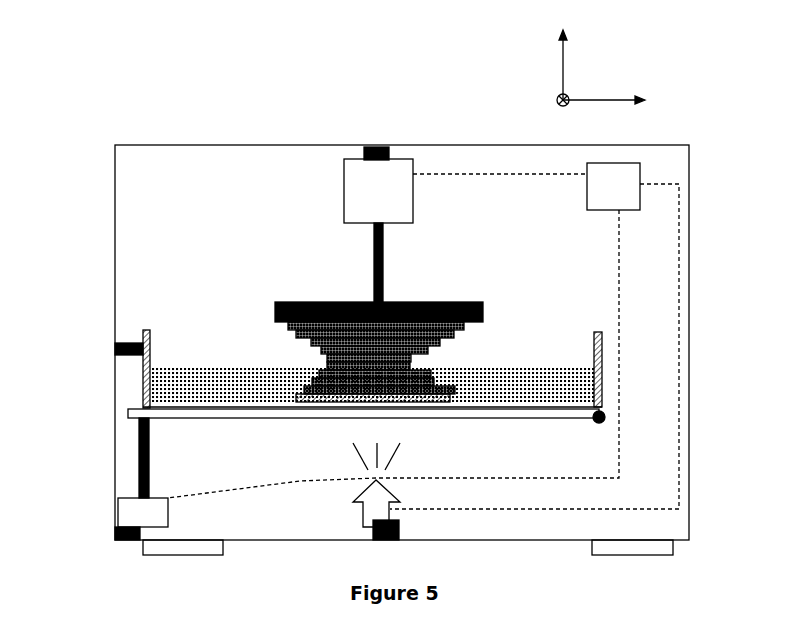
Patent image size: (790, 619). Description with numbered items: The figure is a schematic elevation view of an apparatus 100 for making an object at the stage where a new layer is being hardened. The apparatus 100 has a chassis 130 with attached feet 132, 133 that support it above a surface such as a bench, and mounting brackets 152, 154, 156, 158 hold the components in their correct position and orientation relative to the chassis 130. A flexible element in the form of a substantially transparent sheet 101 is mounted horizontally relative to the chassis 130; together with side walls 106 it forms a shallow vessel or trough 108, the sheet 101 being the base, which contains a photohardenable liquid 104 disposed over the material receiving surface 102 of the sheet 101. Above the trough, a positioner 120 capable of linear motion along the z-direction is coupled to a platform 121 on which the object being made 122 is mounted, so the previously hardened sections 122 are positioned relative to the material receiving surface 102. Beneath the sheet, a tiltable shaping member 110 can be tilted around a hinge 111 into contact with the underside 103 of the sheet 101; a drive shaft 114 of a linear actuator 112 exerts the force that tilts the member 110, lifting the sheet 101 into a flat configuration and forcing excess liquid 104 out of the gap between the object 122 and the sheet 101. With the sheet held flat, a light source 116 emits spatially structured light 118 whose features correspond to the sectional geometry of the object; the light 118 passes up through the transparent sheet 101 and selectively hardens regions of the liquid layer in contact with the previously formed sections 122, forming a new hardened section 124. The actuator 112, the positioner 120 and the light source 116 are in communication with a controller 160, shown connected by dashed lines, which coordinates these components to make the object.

The apparatus for making an object 100 is at (485, 76).
The substantially transparent sheet 101 is at (143, 412).
The material receiving surface 102 is at (185, 403).
The underside of the sheet 103 is at (229, 408).
The photohardenable liquid 104 is at (548, 388).
The side walls 106 is at (596, 340).
The trough 108 is at (128, 387).
The tiltable shaping member 110 is at (563, 420).
The hinge 111 is at (604, 422).
The linear actuator 112 is at (158, 518).
The drive shaft 114 is at (150, 490).
The light source 116 is at (390, 515).
The structured light 118 is at (370, 468).
The positioner 120 is at (413, 209).
The platform 121 is at (300, 302).
The object being made 122 is at (335, 362).
The new hardened section 124 is at (430, 398).
The chassis 130 is at (286, 145).
The foot 132 is at (225, 548).
The foot 133 is at (592, 548).
The mounting bracket 152 is at (117, 345).
The mounting bracket 154 is at (376, 147).
The mounting bracket 156 is at (115, 536).
The mounting bracket 158 is at (400, 532).
The controller 160 is at (628, 195).